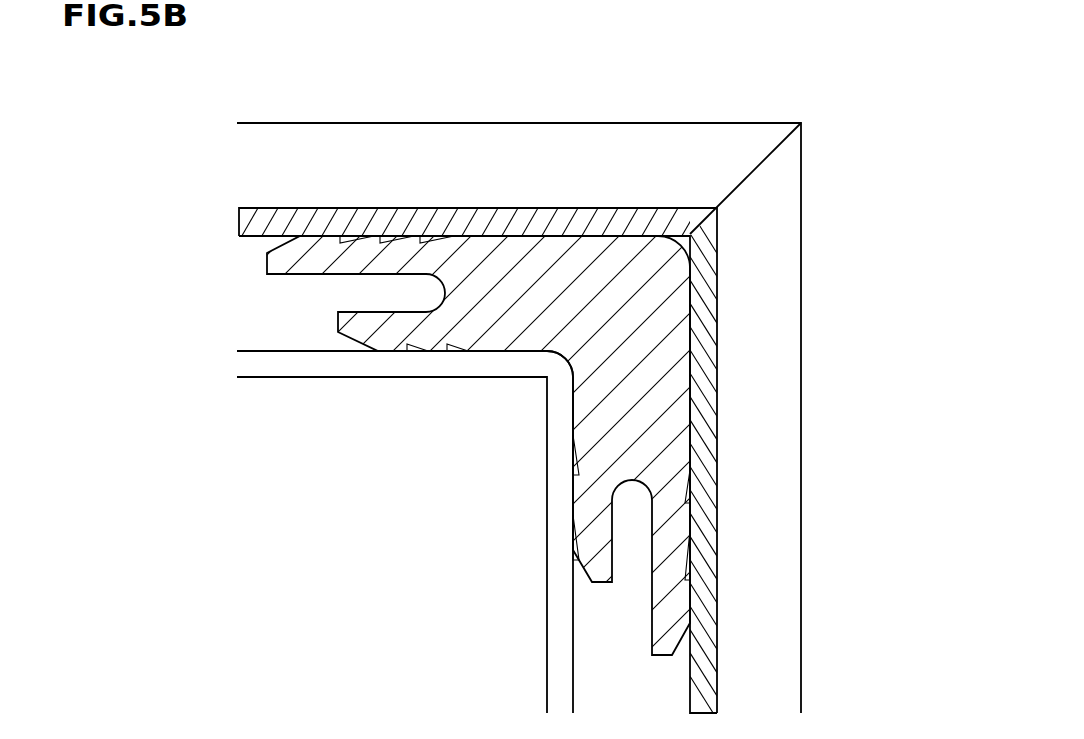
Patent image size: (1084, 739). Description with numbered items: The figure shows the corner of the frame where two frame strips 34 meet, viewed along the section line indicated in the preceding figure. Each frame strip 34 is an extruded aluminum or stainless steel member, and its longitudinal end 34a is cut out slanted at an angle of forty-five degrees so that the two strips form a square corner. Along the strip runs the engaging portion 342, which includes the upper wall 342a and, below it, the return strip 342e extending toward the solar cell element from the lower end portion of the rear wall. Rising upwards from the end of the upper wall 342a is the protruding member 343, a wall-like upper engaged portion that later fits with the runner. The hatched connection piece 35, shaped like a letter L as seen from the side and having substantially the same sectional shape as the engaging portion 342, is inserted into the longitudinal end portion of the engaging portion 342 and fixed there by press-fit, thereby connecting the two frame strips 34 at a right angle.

The frame strip 34 is at (562, 381).
The end 34a is at (756, 170).
The protruding member 343 is at (592, 147).
The engaging portion 342 is at (477, 397).
The upper wall 342a is at (328, 214).
The return strip 342e is at (387, 365).
The connection piece 35 is at (497, 337).